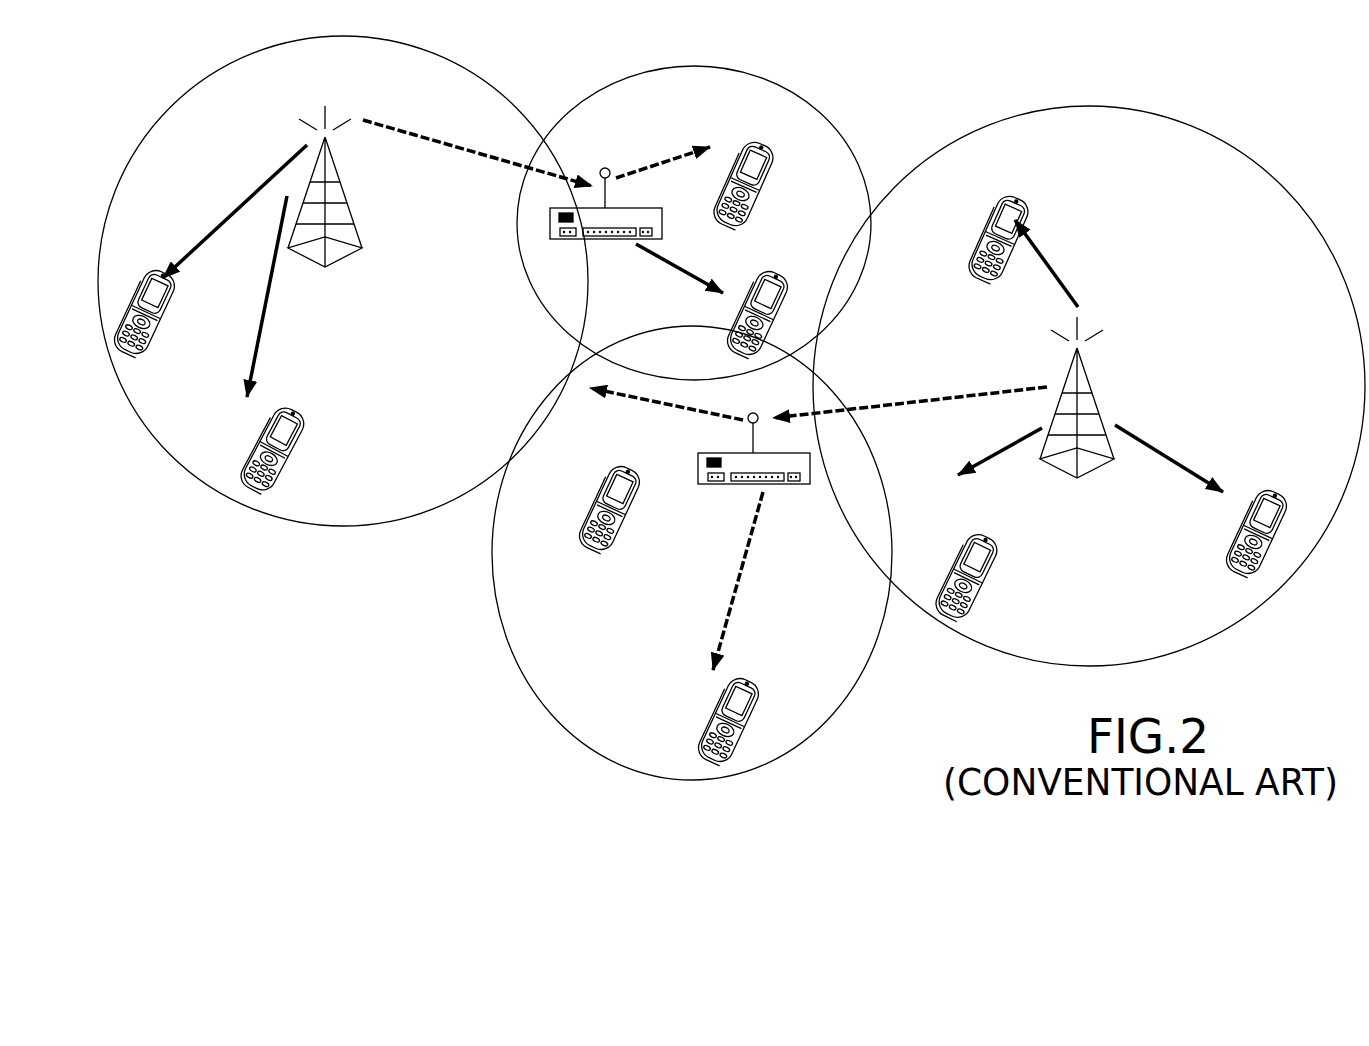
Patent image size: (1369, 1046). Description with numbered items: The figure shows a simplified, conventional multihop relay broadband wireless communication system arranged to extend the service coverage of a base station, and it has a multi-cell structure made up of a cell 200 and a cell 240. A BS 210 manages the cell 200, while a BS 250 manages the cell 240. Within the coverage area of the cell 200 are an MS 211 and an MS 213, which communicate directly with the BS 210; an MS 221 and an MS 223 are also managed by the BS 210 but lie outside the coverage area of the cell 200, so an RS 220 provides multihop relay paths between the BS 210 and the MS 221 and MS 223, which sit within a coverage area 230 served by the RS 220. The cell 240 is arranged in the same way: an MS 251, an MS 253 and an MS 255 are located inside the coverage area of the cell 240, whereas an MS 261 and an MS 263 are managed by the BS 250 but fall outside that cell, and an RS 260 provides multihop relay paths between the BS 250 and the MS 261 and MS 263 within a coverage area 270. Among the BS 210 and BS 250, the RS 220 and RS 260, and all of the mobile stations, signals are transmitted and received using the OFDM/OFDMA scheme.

The cell 200 is at (343, 281).
The BS 210 is at (348, 192).
The MS 211 is at (127, 270).
The MS 213 is at (265, 408).
The RS 220 is at (575, 239).
The MS 221 is at (749, 276).
The MS 223 is at (735, 145).
The coverage area 230 is at (694, 223).
The cell 240 is at (1089, 386).
The BS 250 is at (1096, 398).
The MS 251 is at (983, 197).
The MS 253 is at (1242, 490).
The MS 255 is at (950, 535).
The RS 260 is at (706, 483).
The MS 261 is at (600, 466).
The MS 263 is at (718, 678).
The coverage area 270 is at (692, 553).